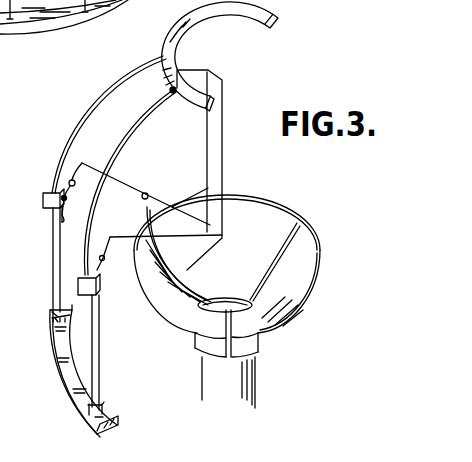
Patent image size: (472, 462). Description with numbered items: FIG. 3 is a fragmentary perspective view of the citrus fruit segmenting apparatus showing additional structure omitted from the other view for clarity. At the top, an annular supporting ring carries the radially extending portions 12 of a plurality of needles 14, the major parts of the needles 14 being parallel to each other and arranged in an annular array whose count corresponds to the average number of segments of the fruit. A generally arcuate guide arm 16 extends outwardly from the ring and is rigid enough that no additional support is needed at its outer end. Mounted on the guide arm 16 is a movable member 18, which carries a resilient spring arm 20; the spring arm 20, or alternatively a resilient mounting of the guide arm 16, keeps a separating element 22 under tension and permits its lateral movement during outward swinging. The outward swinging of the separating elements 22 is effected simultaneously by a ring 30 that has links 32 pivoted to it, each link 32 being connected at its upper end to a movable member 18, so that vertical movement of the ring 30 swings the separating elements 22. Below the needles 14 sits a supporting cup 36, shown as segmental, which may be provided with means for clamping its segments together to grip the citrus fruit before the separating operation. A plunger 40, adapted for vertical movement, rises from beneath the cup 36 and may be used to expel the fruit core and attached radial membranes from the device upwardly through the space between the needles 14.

The radially extending portion 12 is at (192, 69).
The needle 14 is at (222, 170).
The guide arm 16 is at (97, 97).
The movable member 18 is at (43, 200).
The resilient spring arm 20 is at (80, 152).
The separating element 22 is at (146, 193).
The ring 30 is at (65, 393).
The link 32 is at (100, 362).
The supporting cup 36 is at (295, 302).
The plunger 40 is at (253, 378).